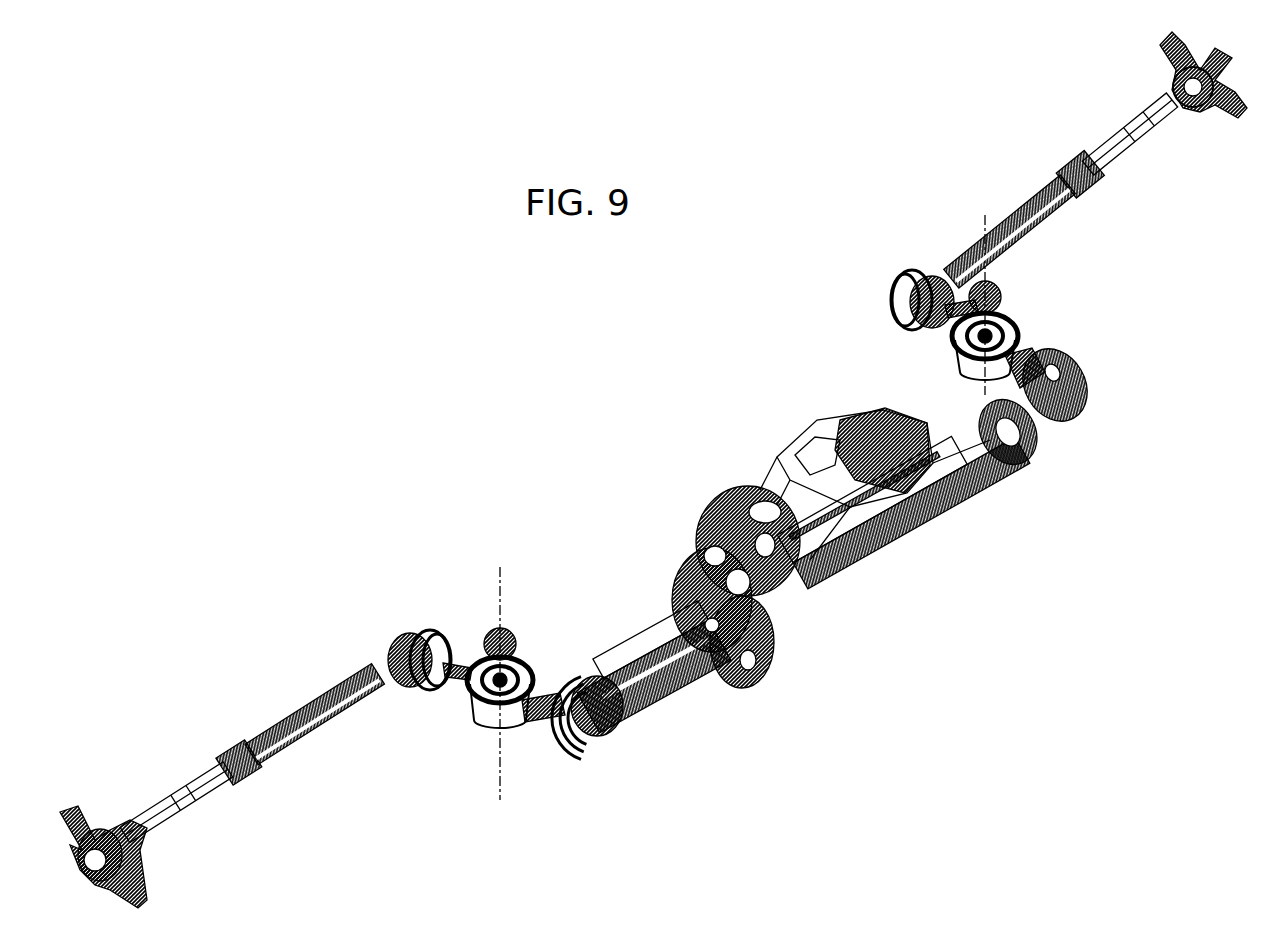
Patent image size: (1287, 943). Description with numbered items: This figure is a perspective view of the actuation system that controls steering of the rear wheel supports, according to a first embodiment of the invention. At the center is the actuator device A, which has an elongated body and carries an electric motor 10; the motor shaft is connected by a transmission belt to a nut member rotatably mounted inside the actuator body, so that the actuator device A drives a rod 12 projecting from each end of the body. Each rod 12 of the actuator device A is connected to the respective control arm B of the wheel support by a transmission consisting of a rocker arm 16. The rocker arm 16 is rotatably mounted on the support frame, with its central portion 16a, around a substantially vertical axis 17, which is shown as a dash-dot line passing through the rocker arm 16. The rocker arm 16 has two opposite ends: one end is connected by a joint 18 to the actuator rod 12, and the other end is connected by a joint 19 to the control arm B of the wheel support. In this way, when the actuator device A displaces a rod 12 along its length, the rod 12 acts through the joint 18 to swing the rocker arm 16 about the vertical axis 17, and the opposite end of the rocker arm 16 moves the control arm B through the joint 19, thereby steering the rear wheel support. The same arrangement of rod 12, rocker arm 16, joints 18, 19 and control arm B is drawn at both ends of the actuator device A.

The actuator device A is at (768, 442).
The control arm B is at (1043, 180).
The electric motor 10 is at (768, 487).
The rod 12 is at (1027, 386).
The rocker arm 16 is at (936, 349).
The central portion of the rocker arm 16a is at (1020, 333).
The substantially vertical axis 17 is at (1008, 312).
The joint 18 is at (580, 740).
The joint 19 is at (917, 273).